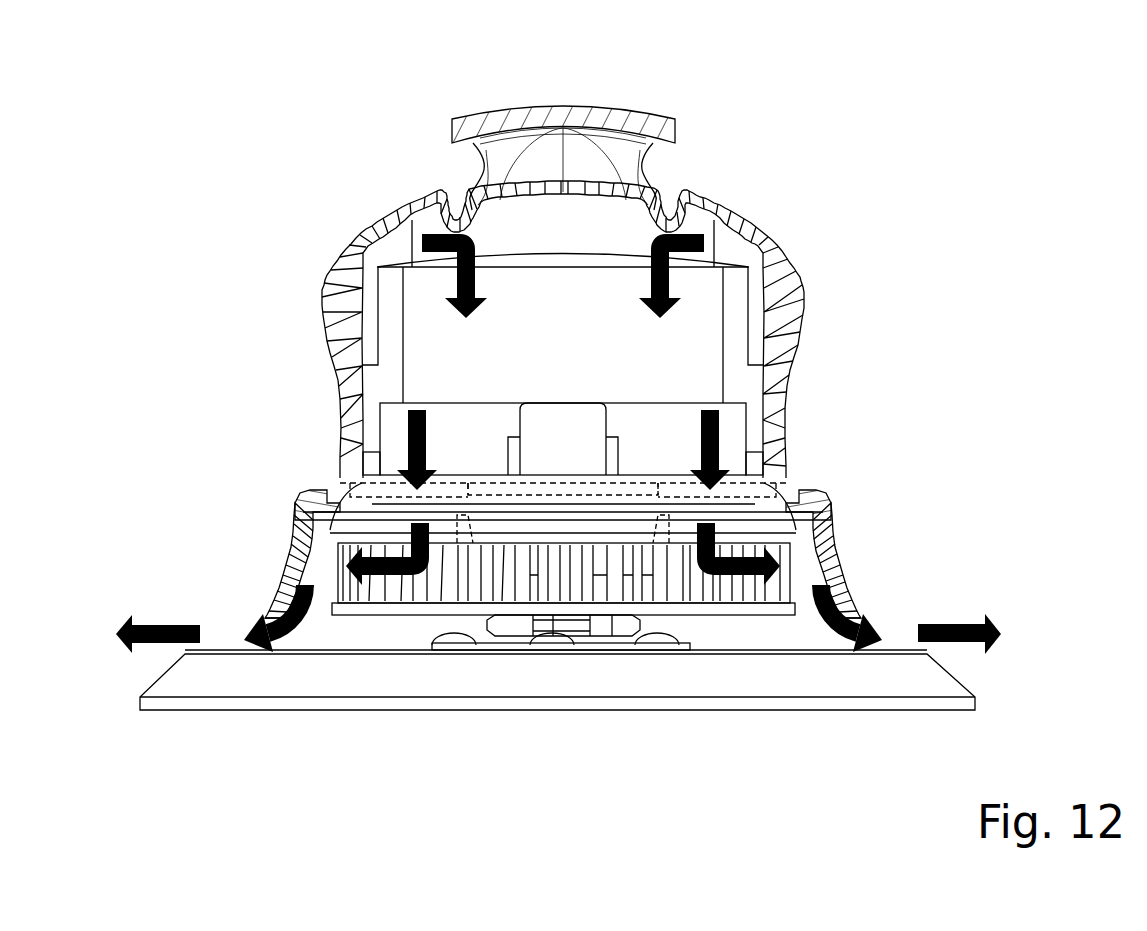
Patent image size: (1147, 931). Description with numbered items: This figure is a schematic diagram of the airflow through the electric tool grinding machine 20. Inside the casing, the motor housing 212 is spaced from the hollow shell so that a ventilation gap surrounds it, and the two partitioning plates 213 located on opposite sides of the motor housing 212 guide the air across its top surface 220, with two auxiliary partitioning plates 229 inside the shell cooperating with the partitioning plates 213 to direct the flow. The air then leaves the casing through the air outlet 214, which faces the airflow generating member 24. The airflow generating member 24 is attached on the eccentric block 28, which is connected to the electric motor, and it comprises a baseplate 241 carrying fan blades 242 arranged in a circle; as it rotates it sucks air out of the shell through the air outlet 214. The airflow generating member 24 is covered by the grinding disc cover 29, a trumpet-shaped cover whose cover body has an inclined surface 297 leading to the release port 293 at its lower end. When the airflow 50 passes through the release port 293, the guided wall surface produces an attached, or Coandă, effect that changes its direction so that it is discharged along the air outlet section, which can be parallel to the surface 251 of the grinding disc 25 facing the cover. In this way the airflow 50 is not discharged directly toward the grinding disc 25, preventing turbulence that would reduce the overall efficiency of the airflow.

The electric tool grinding machine 20 is at (1088, 54).
The top surface 220 is at (546, 250).
The motor housing 212 is at (618, 247).
The auxiliary partitioning plates 229 is at (394, 241).
The partitioning plates 213 is at (392, 320).
The air outlet 214 is at (370, 470).
The grinding disc cover 29 is at (545, 546).
The inclined surface 297 is at (288, 580).
The release port 293 is at (270, 616).
The airflow 50 is at (968, 623).
The airflow generating member 24 is at (563, 640).
The baseplate 241 is at (458, 606).
The fan blades 242 is at (512, 578).
The eccentric block 28 is at (615, 525).
The grinding disc 25 is at (557, 711).
The surface 251 is at (823, 652).